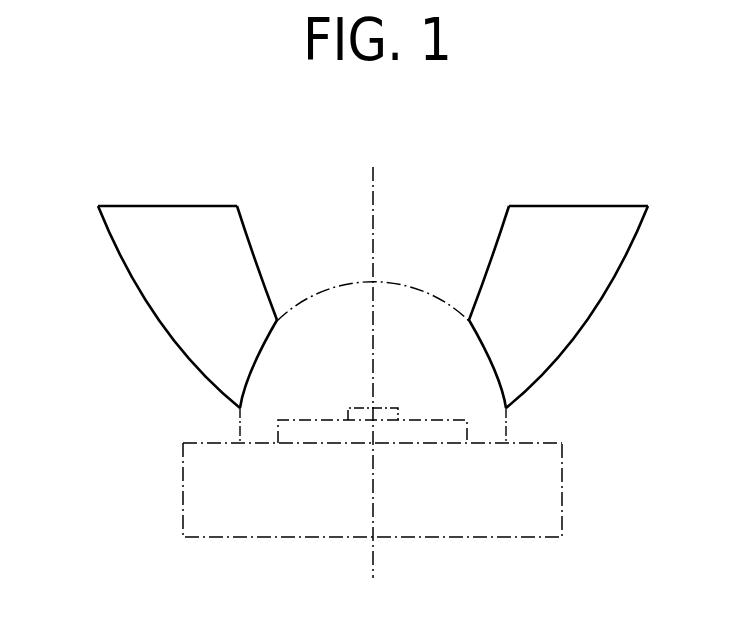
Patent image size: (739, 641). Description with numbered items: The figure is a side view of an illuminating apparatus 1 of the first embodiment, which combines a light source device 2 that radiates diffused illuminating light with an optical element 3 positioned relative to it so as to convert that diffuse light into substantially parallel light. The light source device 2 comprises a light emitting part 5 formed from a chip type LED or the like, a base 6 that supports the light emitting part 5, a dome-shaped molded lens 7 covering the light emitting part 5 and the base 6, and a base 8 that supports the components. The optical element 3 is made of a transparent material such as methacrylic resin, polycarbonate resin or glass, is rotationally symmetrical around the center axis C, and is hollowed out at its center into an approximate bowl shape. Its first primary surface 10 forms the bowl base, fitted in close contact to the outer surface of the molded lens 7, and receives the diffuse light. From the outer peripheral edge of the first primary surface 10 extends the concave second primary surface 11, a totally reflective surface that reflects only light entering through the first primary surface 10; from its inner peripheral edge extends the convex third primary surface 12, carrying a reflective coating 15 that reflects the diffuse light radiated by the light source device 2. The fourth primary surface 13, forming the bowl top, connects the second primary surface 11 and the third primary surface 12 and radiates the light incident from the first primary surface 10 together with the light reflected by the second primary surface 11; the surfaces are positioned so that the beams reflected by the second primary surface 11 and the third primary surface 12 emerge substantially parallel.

The illuminating apparatus 1 is at (442, 202).
The light source device 2 is at (640, 350).
The optical element 3 is at (590, 205).
The light emitting part 5 is at (400, 411).
The base 6 is at (470, 420).
The molded lens 7 is at (505, 437).
The base 8 is at (553, 500).
The primary surface-1 10 is at (248, 397).
The primary surface-2 11 is at (149, 301).
The primary surface-3 12 is at (247, 229).
The primary surface-4 13 is at (172, 205).
The reflective coating 15 is at (262, 282).
The center axis C is at (372, 192).